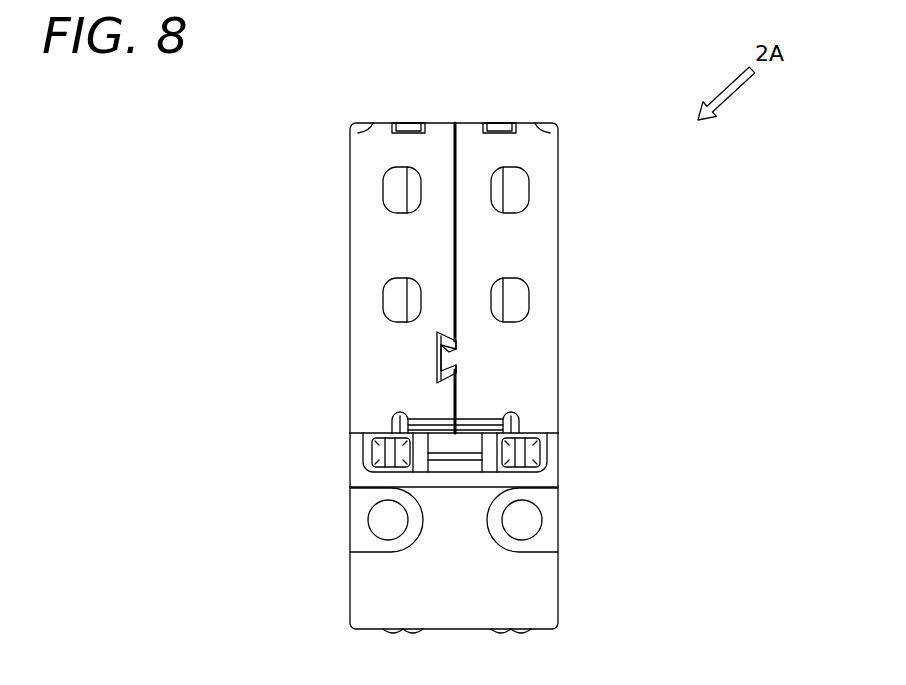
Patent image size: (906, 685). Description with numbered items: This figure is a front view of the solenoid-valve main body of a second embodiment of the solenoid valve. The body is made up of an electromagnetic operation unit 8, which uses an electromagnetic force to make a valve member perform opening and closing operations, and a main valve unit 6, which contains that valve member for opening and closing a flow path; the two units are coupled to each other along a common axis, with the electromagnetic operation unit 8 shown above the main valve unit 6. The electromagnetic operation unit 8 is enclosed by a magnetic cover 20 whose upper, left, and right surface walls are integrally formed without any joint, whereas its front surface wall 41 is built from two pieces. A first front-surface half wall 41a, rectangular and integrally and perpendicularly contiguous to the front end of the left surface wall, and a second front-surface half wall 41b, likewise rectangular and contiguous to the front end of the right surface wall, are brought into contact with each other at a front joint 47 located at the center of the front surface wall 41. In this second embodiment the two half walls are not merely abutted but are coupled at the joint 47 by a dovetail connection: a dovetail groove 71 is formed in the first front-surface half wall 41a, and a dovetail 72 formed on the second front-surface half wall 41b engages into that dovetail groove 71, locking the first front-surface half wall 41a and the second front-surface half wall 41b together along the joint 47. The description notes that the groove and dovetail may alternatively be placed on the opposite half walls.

The electromagnetic operation unit 8 is at (345, 148).
The magnetic cover 20 is at (563, 165).
The front surface wall 41 is at (247, 213).
The first front-surface half wall 41a is at (393, 225).
The second front-surface half wall 41b is at (483, 257).
The front joint 47 is at (457, 223).
The dovetail groove 71 is at (437, 357).
The dovetail 72 is at (447, 360).
The main valve unit 6 is at (338, 520).